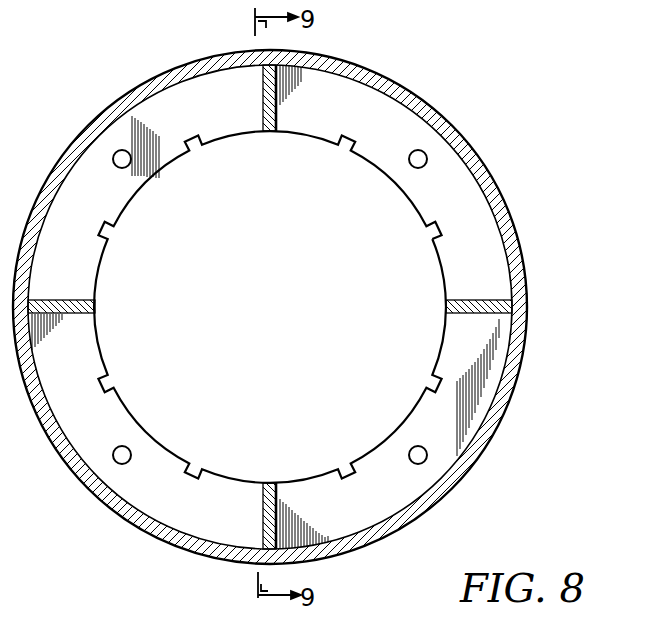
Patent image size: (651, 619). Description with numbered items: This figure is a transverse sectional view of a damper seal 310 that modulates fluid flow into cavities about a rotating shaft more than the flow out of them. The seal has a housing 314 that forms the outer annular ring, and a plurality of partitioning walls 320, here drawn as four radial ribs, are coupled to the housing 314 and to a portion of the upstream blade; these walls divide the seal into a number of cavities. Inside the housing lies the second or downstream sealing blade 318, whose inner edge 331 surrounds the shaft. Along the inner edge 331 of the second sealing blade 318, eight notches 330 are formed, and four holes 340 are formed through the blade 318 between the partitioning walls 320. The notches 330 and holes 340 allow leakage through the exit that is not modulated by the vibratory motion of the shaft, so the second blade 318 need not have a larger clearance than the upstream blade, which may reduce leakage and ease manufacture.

The damper seal 310 is at (103, 78).
The housing 314 is at (528, 278).
The second sealing blade 318 is at (92, 340).
The partitioning walls 320 is at (278, 112).
The notches 330 is at (196, 150).
The inner edge 331 is at (236, 479).
The holes 340 is at (118, 156).